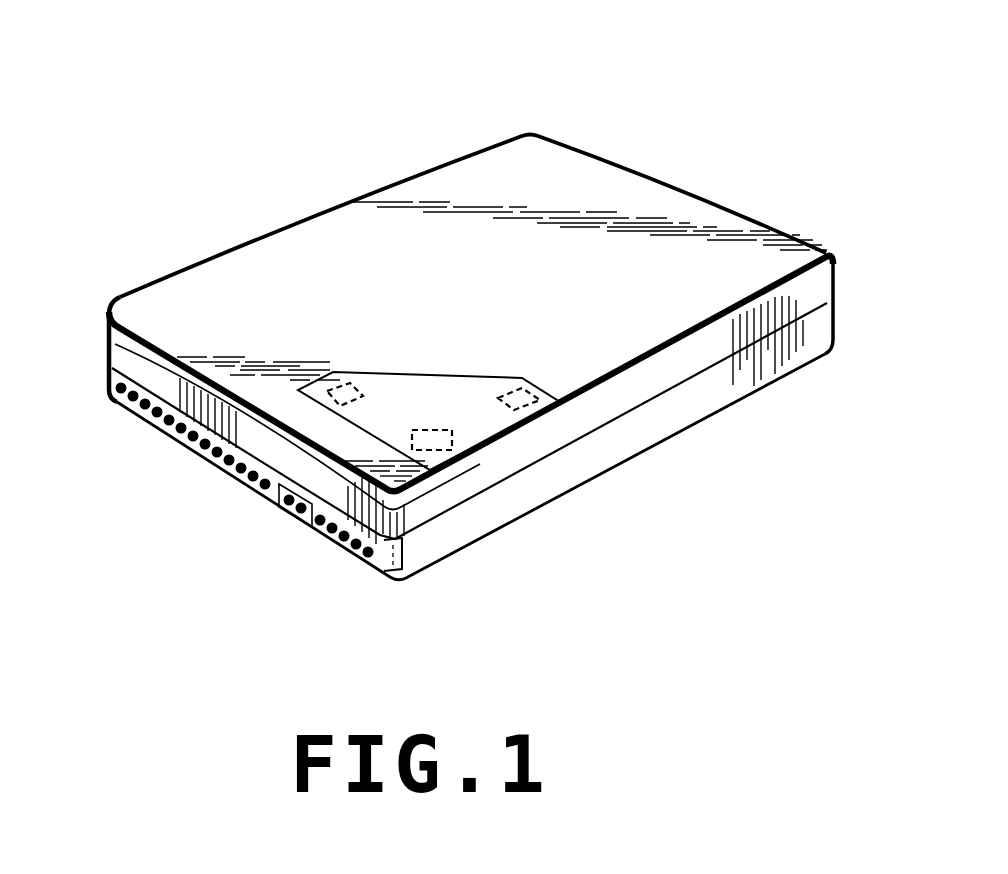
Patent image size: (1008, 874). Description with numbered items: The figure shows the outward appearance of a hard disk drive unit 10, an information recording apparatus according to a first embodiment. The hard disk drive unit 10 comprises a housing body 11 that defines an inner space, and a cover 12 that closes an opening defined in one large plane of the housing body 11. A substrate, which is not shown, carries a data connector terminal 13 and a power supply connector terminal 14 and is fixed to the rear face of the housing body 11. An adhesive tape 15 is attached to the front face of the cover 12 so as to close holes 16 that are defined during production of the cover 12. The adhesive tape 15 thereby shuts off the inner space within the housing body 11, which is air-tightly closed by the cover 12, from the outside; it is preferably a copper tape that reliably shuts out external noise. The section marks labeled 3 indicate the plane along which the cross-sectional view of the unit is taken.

The hard disk drive unit 10 is at (298, 158).
The housing body 11 is at (108, 346).
The cover 12 is at (133, 310).
The data connector terminal 13 is at (148, 430).
The power supply connector terminal 14 is at (350, 546).
The adhesive tape 15 is at (478, 397).
The holes 16 is at (363, 387).
The section line 3 is at (830, 238).